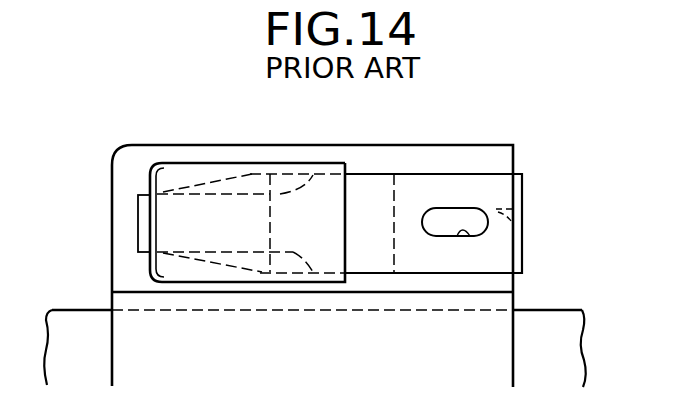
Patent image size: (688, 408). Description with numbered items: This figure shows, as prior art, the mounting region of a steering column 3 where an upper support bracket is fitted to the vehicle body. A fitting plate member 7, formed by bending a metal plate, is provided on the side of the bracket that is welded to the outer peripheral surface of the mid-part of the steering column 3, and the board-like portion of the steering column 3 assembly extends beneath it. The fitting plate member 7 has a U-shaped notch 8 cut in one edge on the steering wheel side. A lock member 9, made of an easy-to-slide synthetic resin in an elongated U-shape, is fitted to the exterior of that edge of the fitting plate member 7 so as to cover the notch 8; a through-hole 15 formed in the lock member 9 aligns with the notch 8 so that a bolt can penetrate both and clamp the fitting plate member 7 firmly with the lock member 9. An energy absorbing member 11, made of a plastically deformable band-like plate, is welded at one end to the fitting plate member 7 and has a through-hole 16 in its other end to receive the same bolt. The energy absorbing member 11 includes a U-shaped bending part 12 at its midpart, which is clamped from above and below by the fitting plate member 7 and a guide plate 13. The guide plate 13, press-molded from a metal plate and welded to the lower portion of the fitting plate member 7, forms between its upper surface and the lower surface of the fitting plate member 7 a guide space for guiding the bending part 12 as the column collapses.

The steering column 3 is at (570, 340).
The fitting plate member 7 is at (417, 157).
The U-shaped notch 8 is at (513, 224).
The lock member 9 is at (513, 185).
The energy absorbing member 11 is at (235, 208).
The U-shaped bending part 12 is at (143, 225).
The guide plate 13 is at (188, 173).
The through-hole 15 is at (470, 234).
The through-hole 16 is at (458, 236).